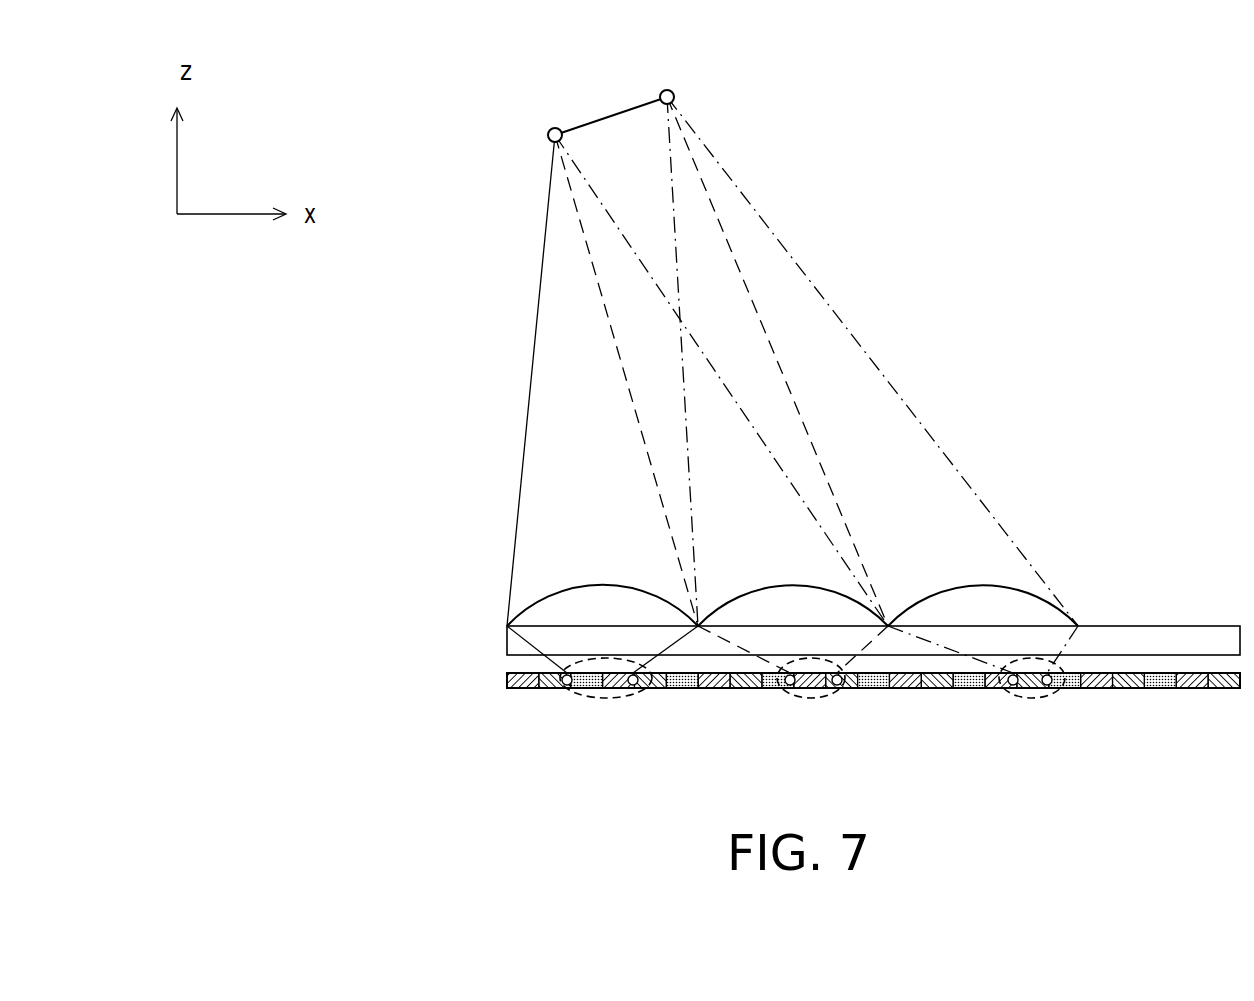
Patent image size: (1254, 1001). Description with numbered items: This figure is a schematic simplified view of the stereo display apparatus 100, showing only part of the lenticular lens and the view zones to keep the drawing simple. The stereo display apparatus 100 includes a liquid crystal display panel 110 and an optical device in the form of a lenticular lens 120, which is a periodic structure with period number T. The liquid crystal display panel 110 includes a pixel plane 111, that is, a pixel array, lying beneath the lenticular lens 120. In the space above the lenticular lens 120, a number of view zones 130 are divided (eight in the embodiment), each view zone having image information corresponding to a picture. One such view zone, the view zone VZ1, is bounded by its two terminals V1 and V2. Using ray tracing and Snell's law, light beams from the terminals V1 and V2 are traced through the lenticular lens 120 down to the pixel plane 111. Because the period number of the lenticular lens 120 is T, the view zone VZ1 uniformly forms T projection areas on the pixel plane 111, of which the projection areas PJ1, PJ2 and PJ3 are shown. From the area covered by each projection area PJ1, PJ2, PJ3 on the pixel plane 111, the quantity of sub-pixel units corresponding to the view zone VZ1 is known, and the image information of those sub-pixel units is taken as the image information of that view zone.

The stereo display apparatus 100 is at (356, 565).
The liquid crystal display panel 110 is at (497, 678).
The pixel plane 111 is at (801, 682).
The lenticular lens 120 is at (498, 592).
The view zones 130 is at (508, 77).
The terminal of the view zone V1 is at (547, 137).
The terminal of the view zone V2 is at (675, 93).
The view zone VZ1 is at (613, 114).
The projection area PJ1 is at (601, 698).
The projection area PJ2 is at (809, 698).
The projection area PJ3 is at (1030, 698).